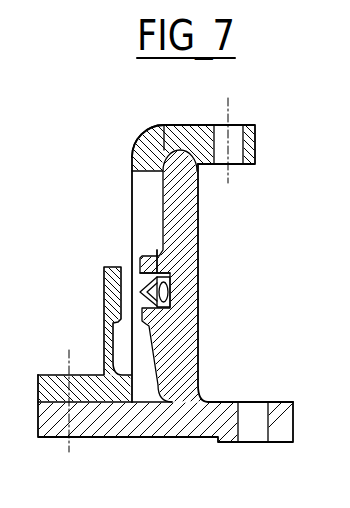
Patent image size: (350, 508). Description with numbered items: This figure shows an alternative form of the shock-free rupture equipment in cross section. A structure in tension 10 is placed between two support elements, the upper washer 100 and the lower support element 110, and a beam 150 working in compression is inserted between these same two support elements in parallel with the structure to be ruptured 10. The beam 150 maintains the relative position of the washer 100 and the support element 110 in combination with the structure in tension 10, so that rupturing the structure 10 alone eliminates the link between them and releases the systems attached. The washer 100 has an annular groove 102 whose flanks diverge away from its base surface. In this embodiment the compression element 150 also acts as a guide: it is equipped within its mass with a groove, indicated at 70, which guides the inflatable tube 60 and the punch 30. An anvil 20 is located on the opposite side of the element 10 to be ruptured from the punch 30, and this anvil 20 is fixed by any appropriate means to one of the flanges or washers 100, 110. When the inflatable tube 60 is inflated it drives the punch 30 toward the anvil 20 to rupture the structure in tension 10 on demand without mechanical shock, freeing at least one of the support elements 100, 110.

The structure in tension 10 is at (130, 218).
The anvil 20 is at (104, 296).
The punch 30 is at (150, 322).
The inflatable tube 60 is at (170, 293).
The seal groove 70 is at (174, 270).
The washer 100 is at (255, 123).
The annular groove 102 is at (164, 124).
The support element 110 is at (207, 418).
The beam working in compression 150 is at (185, 213).